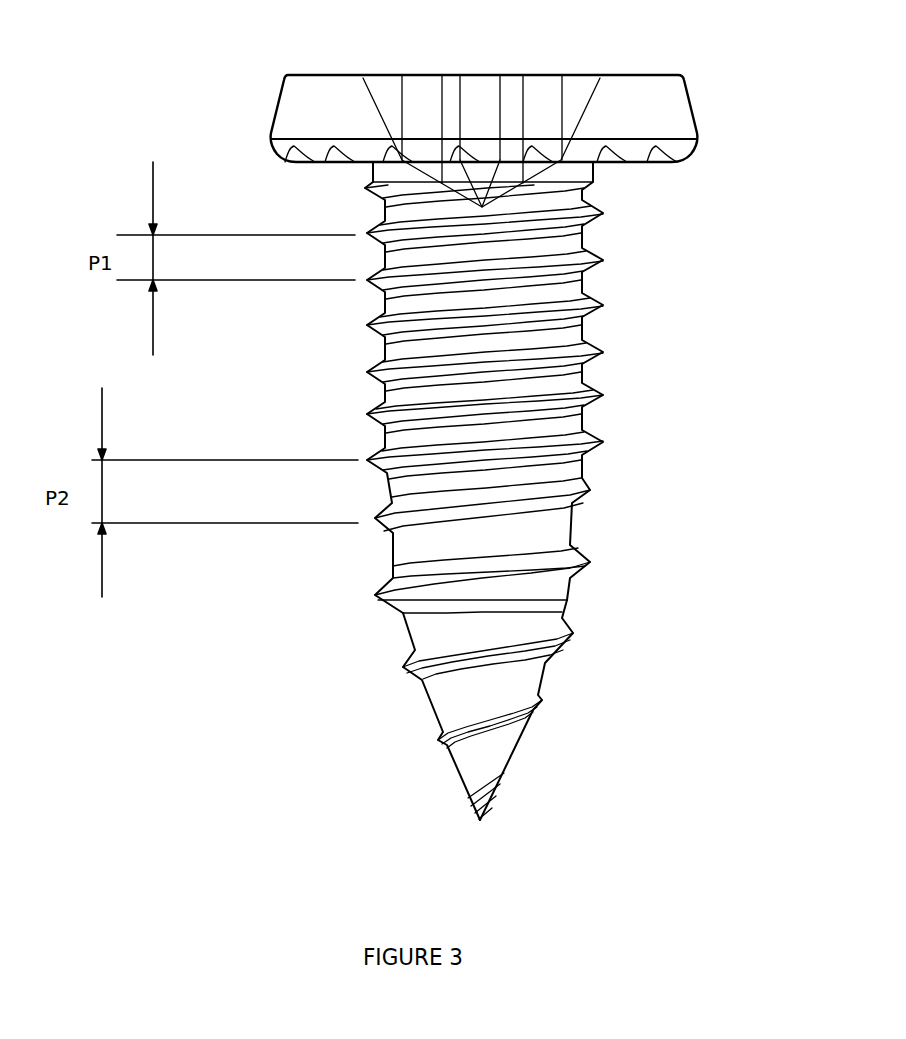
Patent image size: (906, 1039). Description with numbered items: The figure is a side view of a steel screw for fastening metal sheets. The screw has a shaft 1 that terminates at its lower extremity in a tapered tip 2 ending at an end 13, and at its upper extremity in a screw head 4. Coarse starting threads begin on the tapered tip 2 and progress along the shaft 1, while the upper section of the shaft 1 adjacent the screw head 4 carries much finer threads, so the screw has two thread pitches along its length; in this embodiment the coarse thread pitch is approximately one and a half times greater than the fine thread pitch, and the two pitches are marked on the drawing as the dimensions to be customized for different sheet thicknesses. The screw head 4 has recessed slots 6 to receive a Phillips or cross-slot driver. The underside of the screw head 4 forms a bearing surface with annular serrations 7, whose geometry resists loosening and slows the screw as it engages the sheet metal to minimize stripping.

The shaft 1 is at (584, 413).
The tapered tip 2 is at (548, 668).
The screw head 4 is at (663, 105).
The recessed slots 6 is at (603, 70).
The annular serrations 7 is at (268, 220).
The end 13 is at (484, 822).